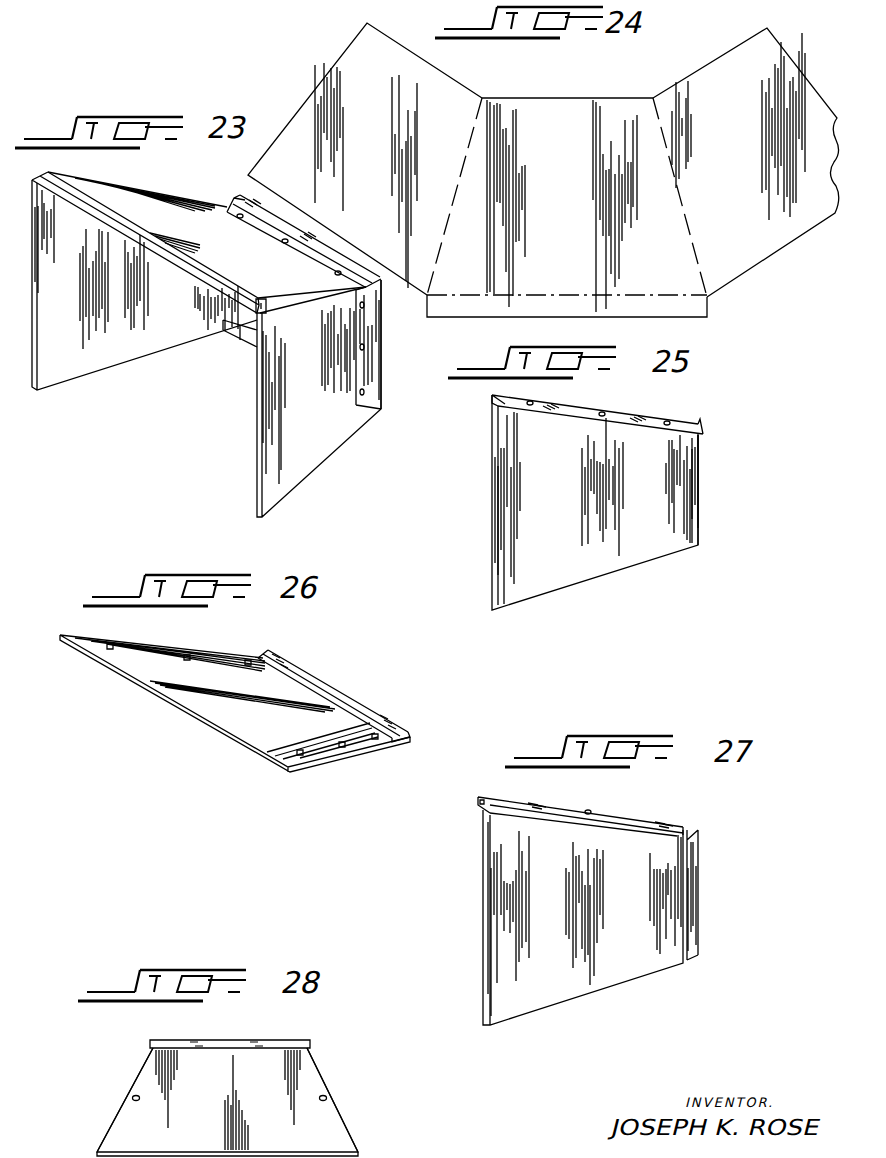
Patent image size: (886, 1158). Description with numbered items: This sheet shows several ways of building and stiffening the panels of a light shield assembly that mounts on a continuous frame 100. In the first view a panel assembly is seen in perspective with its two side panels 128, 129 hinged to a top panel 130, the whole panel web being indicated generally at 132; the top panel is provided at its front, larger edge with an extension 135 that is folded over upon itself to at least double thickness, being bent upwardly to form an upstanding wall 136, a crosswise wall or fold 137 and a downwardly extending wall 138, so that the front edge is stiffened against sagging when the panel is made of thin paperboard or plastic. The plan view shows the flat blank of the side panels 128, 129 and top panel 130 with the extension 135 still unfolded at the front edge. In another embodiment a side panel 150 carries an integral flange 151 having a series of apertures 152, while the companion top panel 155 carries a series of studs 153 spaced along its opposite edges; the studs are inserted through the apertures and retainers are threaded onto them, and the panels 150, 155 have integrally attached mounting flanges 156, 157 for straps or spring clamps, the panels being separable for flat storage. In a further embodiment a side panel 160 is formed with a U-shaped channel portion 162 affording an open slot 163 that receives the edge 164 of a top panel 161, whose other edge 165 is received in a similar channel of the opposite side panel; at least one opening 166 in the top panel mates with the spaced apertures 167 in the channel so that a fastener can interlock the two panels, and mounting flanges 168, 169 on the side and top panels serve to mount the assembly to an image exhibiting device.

In FIG. 23, the continuous frame 100 is at (390, 349).
In FIG. 23, the side panel 128 is at (168, 340).
In FIG. 24, the side panel 128 is at (390, 119).
In FIG. 23, the side panel 129 is at (282, 480).
In FIG. 24, the side panel 129 is at (748, 121).
In FIG. 23, the top panel 130 is at (137, 202).
In FIG. 24, the top panel 130 is at (532, 113).
In FIG. 23, the panel assembly 132 is at (173, 420).
In FIG. 24, the extension 135 is at (484, 306).
In FIG. 23, the upstanding wall 136 is at (147, 243).
In FIG. 23, the crosswise wall 137 is at (180, 254).
In FIG. 23, the downwardly extending wall 138 is at (267, 306).
In FIG. 25, the side panel 150 is at (585, 568).
In FIG. 25, the integral flange 151 is at (573, 412).
In FIG. 25, the apertures 152 is at (522, 405).
In FIG. 26, the studs 153 is at (248, 661).
In FIG. 26, the top panel 155 is at (193, 727).
In FIG. 25, the mounting flange 156 is at (693, 485).
In FIG. 26, the mounting flange 157 is at (337, 700).
In FIG. 27, the side panel 160 is at (590, 987).
In FIG. 28, the top panel 161 is at (300, 1077).
In FIG. 27, the U-shaped channel portion 162 is at (498, 798).
In FIG. 27, the open slot 163 is at (508, 812).
In FIG. 28, the edge 164 is at (133, 1087).
In FIG. 28, the edge 165 is at (337, 1097).
In FIG. 28, the opening 166 is at (135, 1100).
In FIG. 27, the apertures 167 is at (592, 822).
In FIG. 27, the mounting flange 168 is at (693, 897).
In FIG. 28, the mounting flange 169 is at (268, 1045).